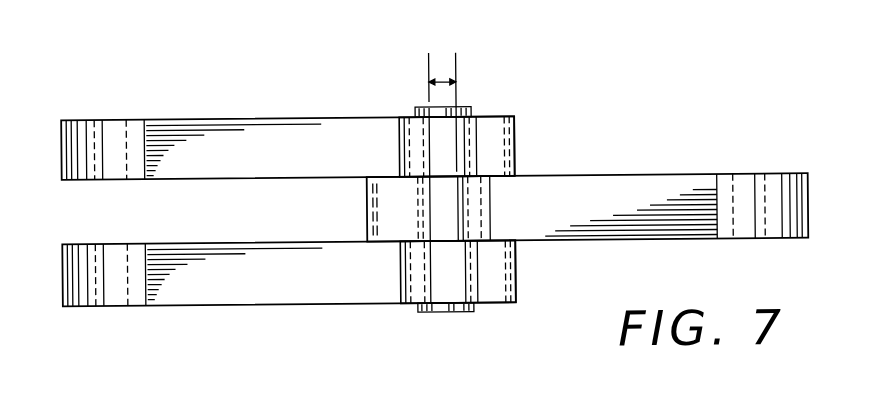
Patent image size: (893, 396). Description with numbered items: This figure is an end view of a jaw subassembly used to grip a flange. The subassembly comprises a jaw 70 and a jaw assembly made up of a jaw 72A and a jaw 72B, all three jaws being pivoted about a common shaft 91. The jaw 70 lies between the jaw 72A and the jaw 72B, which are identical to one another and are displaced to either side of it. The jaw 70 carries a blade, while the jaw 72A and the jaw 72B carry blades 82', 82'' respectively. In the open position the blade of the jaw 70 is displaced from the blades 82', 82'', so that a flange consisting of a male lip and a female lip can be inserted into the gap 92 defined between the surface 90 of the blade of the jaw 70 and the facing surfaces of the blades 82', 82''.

The jaw 72A is at (238, 116).
The jaw 72B is at (200, 239).
The jaw 70 is at (643, 176).
The blade 82' is at (417, 111).
The blade 82'' is at (420, 293).
The surface 90 is at (456, 214).
The common shaft 91 is at (467, 313).
The gap 92 is at (457, 82).